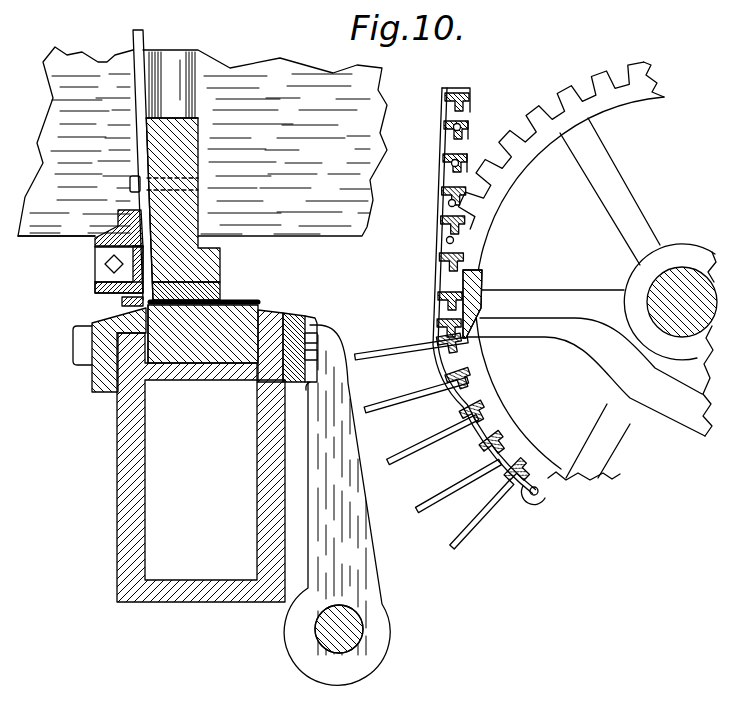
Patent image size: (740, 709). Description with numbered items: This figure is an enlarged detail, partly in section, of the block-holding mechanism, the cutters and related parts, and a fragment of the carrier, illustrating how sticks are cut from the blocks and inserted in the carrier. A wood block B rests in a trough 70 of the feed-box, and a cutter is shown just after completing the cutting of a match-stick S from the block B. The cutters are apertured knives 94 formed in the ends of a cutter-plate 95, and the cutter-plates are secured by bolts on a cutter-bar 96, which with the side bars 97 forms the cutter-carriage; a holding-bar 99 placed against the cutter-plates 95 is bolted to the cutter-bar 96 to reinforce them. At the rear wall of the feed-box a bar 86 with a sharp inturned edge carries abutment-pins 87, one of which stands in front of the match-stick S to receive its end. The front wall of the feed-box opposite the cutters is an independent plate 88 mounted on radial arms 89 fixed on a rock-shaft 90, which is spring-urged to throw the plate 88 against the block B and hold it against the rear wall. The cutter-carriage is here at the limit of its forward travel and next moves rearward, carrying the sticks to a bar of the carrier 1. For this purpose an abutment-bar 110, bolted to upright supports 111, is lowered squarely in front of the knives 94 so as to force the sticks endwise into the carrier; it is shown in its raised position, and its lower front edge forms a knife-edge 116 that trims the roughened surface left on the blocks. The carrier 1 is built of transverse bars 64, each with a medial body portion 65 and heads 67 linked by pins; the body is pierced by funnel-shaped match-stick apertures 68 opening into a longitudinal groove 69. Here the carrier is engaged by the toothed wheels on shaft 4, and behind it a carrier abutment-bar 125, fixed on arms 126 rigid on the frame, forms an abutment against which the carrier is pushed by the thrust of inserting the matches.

The carrier 1 is at (468, 112).
The shaft 4 is at (698, 333).
The transverse bar 64 is at (462, 172).
The medial body portion 65 is at (462, 92).
The head 67 is at (444, 148).
The match-stick apertures 68 is at (446, 194).
The longitudinal groove 69 is at (469, 150).
The trough 70 is at (97, 372).
The bar 86 is at (96, 321).
The abutment-pins 87 is at (122, 300).
The plate 88 is at (286, 314).
The radial arms 89 is at (366, 531).
The rock-shaft 90 is at (360, 627).
The knives 94 is at (152, 320).
The cutter-plate 95 is at (142, 129).
The cutter-bar 96 is at (216, 259).
The side bars 97 is at (202, 141).
The holding-bar 99 is at (118, 216).
The abutment-bar 110 is at (95, 254).
The supports 111 is at (95, 242).
The knife-edge 116 is at (95, 289).
The carrier abutment-bar 125 is at (483, 280).
The arms 126 is at (588, 363).
The wood block B is at (218, 348).
The match-stick S is at (398, 397).